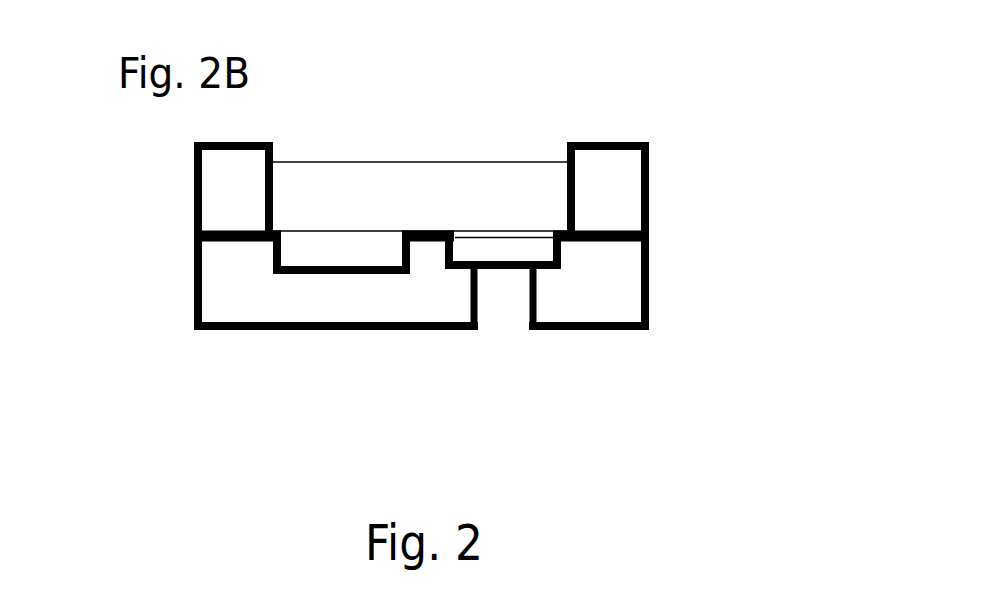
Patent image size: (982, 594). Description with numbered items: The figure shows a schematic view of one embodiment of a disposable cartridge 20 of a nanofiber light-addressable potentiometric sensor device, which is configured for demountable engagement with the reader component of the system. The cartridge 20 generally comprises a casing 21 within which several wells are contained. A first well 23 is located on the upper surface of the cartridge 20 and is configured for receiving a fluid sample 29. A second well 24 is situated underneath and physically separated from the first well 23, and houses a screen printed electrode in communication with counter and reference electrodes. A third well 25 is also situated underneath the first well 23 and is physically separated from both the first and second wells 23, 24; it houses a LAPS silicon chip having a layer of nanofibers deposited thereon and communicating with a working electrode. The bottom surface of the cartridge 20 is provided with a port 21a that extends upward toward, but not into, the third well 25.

The disposable cartridge 20 is at (173, 200).
The casing 21 is at (649, 232).
The port 21a is at (510, 322).
The first well 23 is at (348, 152).
The second well 24 is at (335, 253).
The third well 25 is at (562, 252).
The fluid sample 29 is at (426, 210).